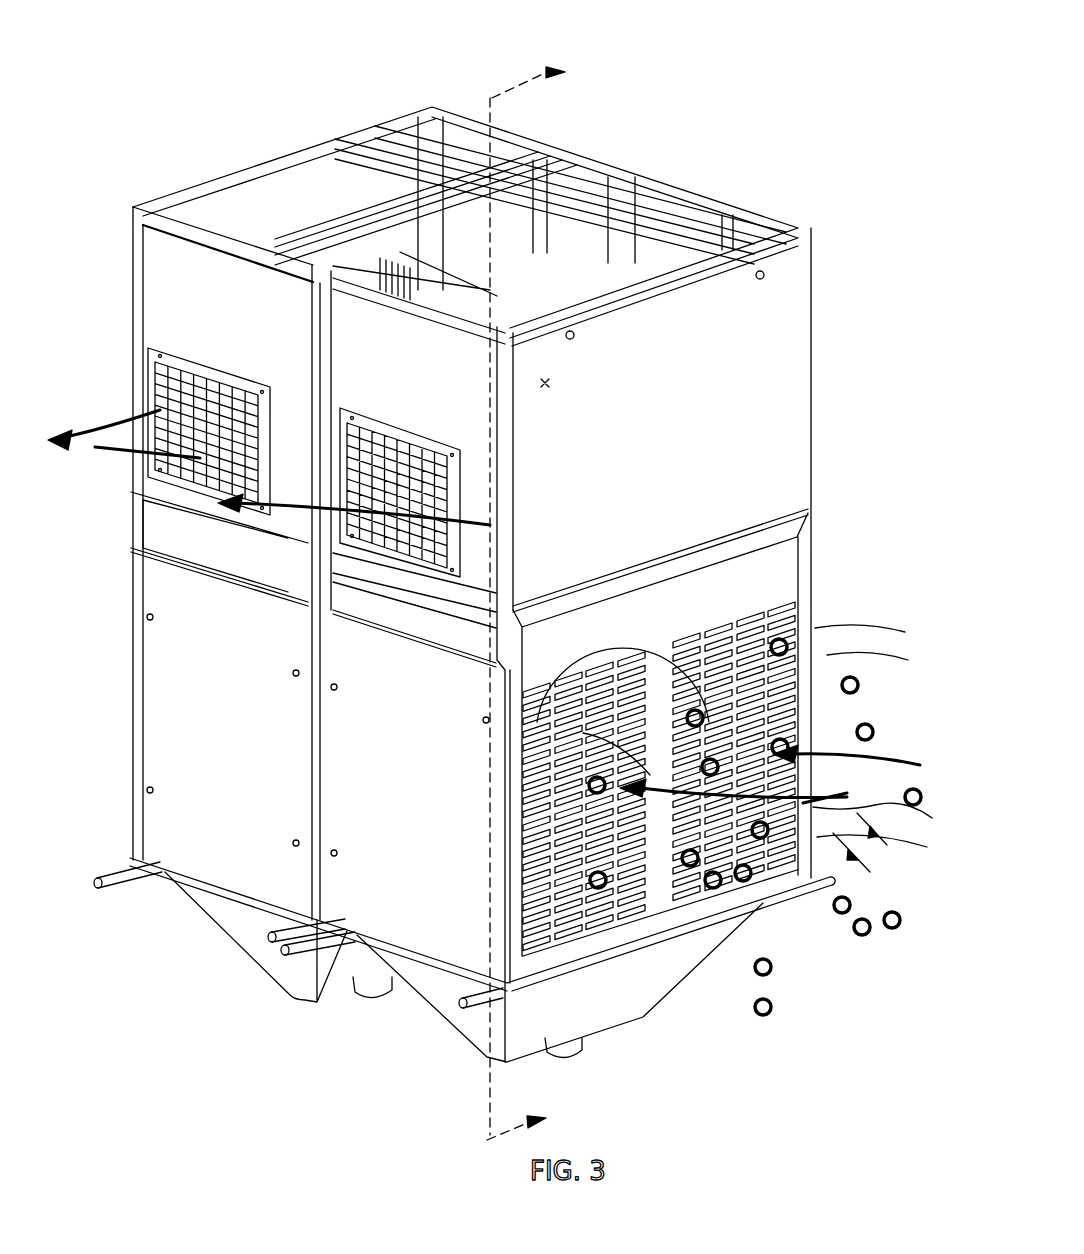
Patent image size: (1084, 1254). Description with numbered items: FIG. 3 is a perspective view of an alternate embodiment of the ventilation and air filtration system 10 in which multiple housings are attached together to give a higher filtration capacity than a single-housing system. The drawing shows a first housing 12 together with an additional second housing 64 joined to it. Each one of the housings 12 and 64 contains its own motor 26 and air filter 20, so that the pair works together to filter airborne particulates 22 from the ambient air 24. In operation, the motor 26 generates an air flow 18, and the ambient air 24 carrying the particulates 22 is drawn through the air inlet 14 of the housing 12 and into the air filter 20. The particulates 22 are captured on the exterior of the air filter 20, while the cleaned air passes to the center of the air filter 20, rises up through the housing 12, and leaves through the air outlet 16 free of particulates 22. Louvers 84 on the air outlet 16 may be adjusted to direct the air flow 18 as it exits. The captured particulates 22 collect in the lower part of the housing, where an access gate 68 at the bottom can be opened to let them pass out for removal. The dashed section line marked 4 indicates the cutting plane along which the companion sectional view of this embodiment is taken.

The ventilation and air filtration system 10 is at (262, 48).
The first housing 12 is at (803, 230).
The air inlet 14 is at (640, 690).
The air outlet 16 is at (150, 413).
The air flow 18 is at (100, 448).
The air filter 20 is at (624, 621).
The particulates 22 is at (705, 890).
The ambient air 24 is at (881, 627).
The motor 26 is at (333, 222).
The second housing 64 is at (430, 105).
The access gate 68 is at (380, 992).
The louvers 84 is at (203, 400).
The section line 4 is at (532, 600).